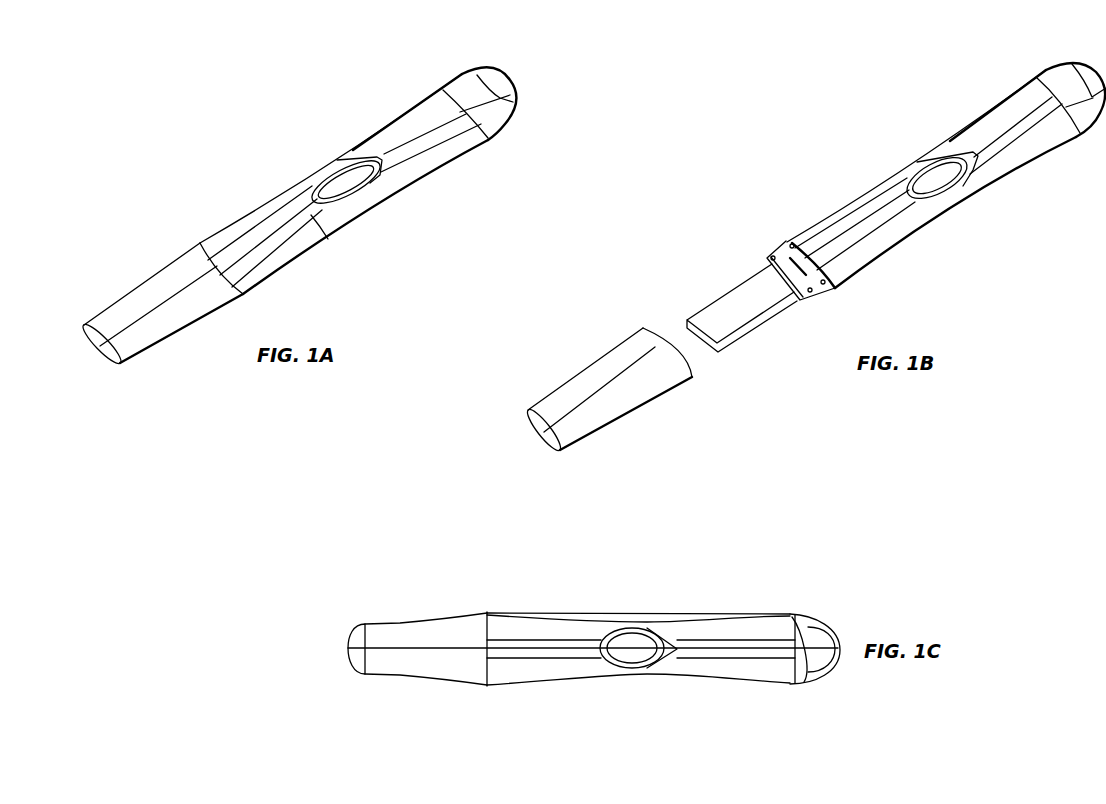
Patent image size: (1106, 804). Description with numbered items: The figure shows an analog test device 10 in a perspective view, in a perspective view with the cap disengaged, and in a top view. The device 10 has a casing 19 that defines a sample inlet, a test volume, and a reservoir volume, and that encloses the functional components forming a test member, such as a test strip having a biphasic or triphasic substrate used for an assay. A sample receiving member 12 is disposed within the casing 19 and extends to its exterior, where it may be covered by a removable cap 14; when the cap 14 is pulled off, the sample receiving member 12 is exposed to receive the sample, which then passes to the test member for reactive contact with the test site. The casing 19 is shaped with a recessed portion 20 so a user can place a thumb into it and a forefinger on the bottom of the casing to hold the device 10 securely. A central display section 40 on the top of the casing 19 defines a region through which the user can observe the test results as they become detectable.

In FIG. 1A, the test device 10 is at (223, 100).
In FIG. 1B, the test device 10 is at (802, 113).
In FIG. 1C, the test device 10 is at (468, 560).
In FIG. 1B, the sample receiving member 12 is at (743, 298).
In FIG. 1A, the removable cap 14 is at (167, 290).
In FIG. 1B, the removable cap 14 is at (617, 370).
In FIG. 1C, the removable cap 14 is at (450, 627).
In FIG. 1A, the casing 19 is at (330, 236).
In FIG. 1A, the recessed portion 20 is at (450, 87).
In FIG. 1B, the recessed portion 20 is at (1059, 90).
In FIG. 1C, the recessed portion 20 is at (800, 640).
In FIG. 1A, the central display section 40 is at (340, 167).
In FIG. 1B, the central display section 40 is at (943, 173).
In FIG. 1C, the central display section 40 is at (654, 634).